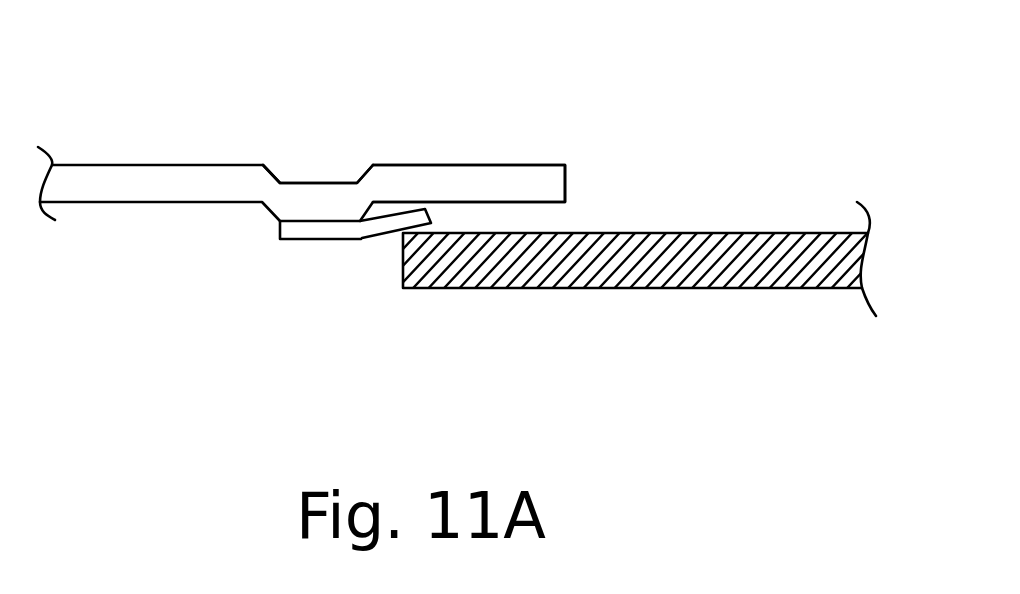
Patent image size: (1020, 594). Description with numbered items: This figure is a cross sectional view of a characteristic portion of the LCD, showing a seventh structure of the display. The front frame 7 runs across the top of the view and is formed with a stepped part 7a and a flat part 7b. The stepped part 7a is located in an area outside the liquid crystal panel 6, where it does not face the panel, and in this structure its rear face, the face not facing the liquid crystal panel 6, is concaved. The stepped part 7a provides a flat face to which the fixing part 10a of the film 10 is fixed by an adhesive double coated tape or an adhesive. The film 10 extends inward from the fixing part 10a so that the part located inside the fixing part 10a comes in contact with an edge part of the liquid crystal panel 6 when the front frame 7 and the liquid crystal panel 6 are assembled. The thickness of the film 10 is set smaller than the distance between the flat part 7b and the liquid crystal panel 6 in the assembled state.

The front frame 7 is at (105, 183).
The stepped part 7a is at (293, 183).
The flat part 7b is at (432, 165).
The film 10 is at (368, 227).
The fixing part 10a is at (295, 241).
The liquid crystal panel 6 is at (728, 232).